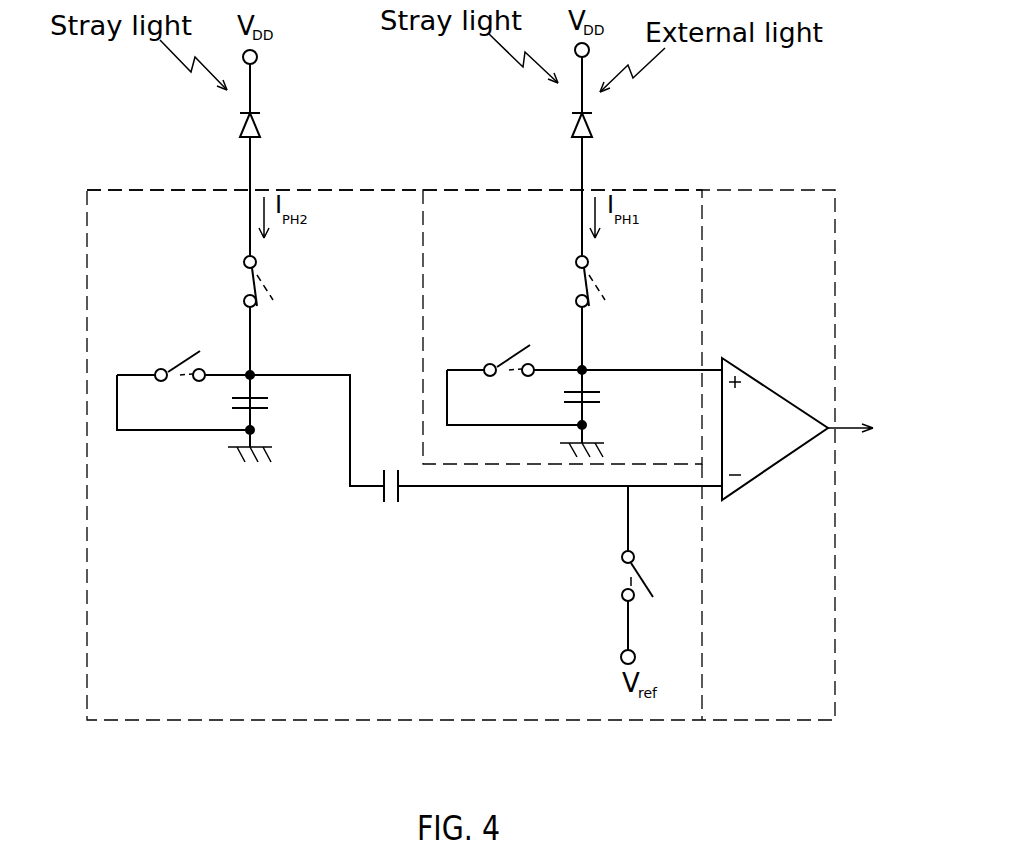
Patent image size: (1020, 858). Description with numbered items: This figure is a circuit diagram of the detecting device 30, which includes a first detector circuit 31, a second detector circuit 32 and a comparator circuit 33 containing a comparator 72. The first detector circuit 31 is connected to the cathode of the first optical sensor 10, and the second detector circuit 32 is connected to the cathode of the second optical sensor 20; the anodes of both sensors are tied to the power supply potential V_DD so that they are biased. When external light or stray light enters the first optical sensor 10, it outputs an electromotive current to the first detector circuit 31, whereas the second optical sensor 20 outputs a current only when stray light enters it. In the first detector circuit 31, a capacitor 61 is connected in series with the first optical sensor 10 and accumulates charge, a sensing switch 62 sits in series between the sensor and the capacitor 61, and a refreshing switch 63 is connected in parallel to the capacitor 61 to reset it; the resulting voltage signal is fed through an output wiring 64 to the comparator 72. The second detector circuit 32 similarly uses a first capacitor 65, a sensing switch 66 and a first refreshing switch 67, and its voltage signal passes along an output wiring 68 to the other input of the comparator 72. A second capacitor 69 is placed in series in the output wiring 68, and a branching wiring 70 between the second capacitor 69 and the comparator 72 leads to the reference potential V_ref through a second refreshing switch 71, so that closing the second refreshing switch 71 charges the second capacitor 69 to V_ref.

The first optical sensor 10 is at (592, 125).
The second optical sensor 20 is at (260, 125).
The detecting device 30 is at (682, 178).
The first detector circuit 31 is at (470, 187).
The second detector circuit 32 is at (173, 187).
The comparator circuit 33 is at (837, 312).
The capacitor 61 is at (594, 388).
The sensing switch 62 is at (583, 287).
The refreshing switch 63 is at (517, 350).
The output wiring 64 is at (662, 368).
The first capacitor 65 is at (262, 390).
The sensing switch 66 is at (252, 287).
The first refreshing switch 67 is at (187, 354).
The output wiring 68 is at (352, 407).
The second capacitor 69 is at (400, 494).
The branching wiring 70 is at (630, 518).
The second refreshing switch 71 is at (654, 577).
The comparator 72 is at (775, 391).